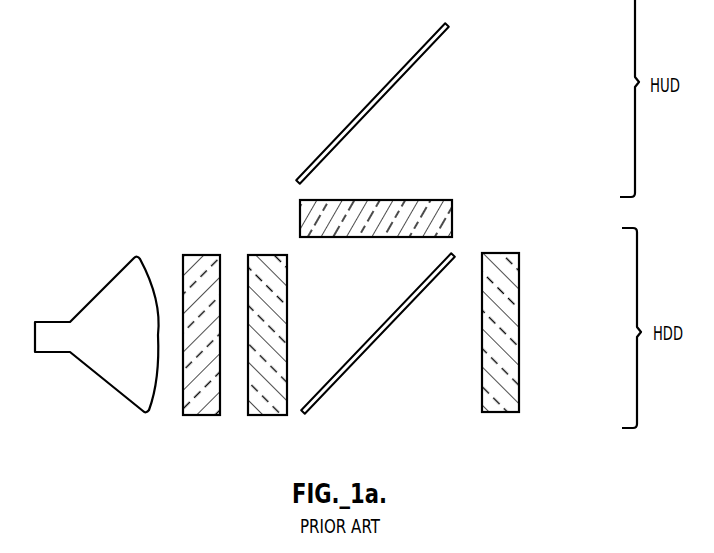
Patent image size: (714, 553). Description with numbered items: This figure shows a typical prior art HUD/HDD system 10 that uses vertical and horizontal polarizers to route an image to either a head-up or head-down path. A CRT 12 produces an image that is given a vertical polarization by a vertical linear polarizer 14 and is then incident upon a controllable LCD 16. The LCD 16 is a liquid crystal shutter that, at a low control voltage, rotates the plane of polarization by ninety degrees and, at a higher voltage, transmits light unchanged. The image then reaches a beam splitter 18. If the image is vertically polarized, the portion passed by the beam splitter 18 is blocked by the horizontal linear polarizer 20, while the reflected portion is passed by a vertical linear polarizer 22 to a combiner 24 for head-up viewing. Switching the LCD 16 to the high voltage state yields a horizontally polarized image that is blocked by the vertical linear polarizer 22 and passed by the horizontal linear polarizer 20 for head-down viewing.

The HUD/HDD system 10 is at (108, 156).
The CRT 12 is at (112, 392).
The vertical linear polarizer 14 is at (203, 415).
The LCD 16 is at (267, 415).
The beam splitter 18 is at (345, 372).
The horizontal linear polarizer 20 is at (507, 412).
The vertical linear polarizer 22 is at (452, 211).
The combiner 24 is at (375, 107).